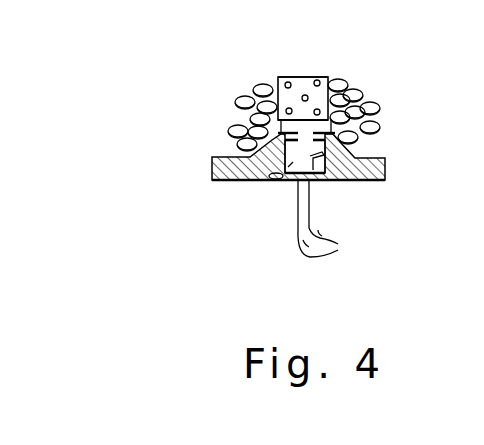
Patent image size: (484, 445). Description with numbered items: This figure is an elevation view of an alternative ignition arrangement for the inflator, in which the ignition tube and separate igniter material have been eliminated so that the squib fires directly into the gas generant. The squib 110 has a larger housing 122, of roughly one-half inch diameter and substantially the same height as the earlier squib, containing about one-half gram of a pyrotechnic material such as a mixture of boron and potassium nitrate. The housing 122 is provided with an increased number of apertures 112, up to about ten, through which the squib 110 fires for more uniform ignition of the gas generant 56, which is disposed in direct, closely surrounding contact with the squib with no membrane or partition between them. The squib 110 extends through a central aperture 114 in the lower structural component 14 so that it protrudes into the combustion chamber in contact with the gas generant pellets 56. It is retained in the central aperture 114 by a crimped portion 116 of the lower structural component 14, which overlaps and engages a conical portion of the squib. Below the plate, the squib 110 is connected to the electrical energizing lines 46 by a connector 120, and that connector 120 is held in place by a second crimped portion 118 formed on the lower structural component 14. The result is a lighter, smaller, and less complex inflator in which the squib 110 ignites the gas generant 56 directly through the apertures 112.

The lower structural component 14 is at (386, 167).
The electrical energizing lines 46 is at (331, 221).
The gas generant 56 is at (370, 108).
The squib 110 is at (310, 76).
The apertures 112 is at (322, 84).
The central aperture 114 is at (318, 183).
The crimped portion 116 is at (273, 131).
The crimped portion 118 is at (288, 183).
The connector 120 is at (270, 182).
The housing 122 is at (300, 87).